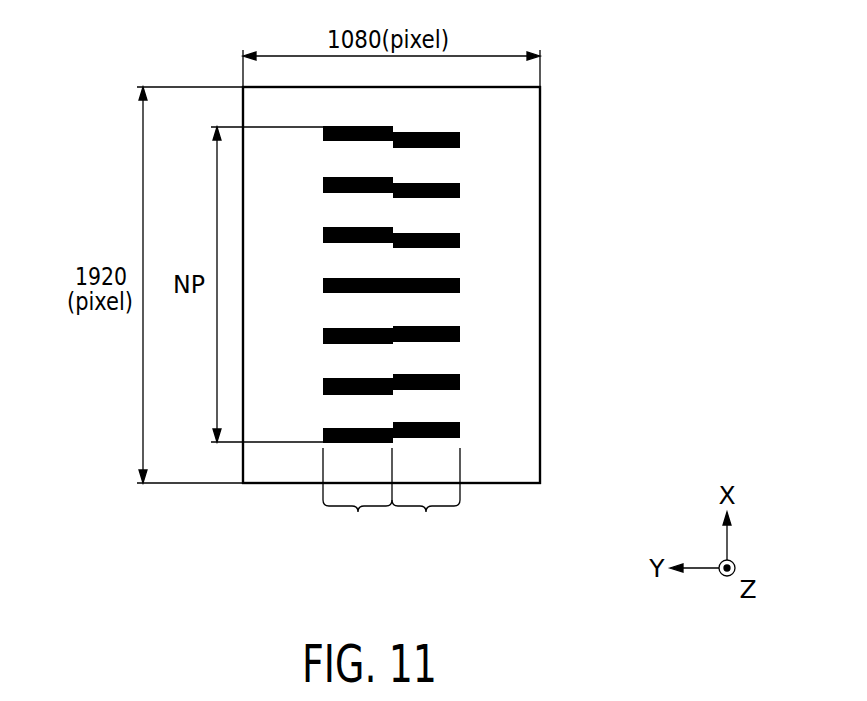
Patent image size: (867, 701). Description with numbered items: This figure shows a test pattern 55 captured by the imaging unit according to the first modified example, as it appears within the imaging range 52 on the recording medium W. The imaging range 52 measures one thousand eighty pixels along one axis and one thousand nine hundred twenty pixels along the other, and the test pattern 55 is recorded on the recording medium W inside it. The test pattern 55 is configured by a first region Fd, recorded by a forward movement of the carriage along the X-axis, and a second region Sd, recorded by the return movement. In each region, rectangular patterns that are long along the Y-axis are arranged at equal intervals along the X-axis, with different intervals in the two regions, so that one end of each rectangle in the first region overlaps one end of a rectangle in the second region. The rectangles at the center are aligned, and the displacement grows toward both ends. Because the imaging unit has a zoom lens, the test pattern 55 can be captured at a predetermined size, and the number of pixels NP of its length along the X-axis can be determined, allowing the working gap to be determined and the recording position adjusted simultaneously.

The recording medium W is at (532, 152).
The imaging range 52 is at (540, 241).
The test pattern 55 is at (445, 547).